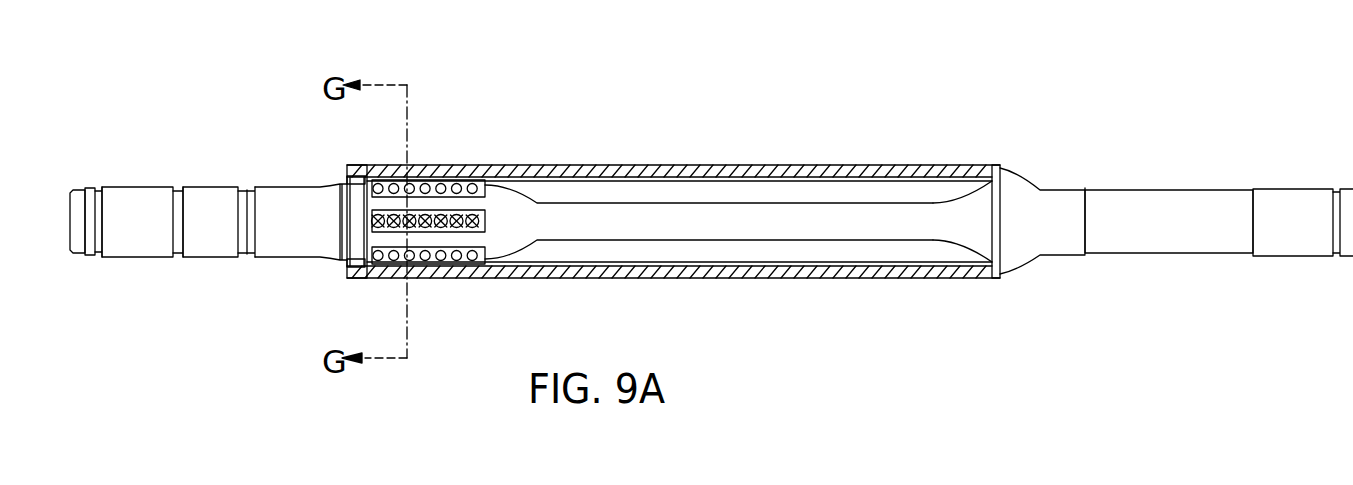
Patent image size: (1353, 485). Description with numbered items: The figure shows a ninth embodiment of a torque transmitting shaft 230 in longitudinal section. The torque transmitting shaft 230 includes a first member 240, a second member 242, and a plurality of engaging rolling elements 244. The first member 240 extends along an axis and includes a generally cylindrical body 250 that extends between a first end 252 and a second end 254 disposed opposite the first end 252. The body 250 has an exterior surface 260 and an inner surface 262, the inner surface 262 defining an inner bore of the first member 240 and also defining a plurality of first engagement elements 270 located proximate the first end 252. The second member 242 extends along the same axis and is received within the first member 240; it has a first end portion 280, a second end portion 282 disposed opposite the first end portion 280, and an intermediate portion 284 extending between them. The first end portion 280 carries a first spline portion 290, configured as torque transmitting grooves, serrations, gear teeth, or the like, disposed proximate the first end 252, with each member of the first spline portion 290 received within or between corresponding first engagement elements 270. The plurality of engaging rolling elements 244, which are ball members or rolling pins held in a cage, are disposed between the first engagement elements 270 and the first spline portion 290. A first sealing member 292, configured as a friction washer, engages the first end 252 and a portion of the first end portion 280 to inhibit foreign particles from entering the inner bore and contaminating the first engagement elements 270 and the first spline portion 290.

The torque transmitting shaft 230 is at (501, 85).
The first member 240 is at (730, 165).
The second member 242 is at (181, 165).
The plurality of engaging rolling elements 244 is at (358, 280).
The body 250 is at (805, 171).
The first end 252 is at (347, 172).
The second end 254 is at (983, 167).
The exterior surface 260 is at (580, 165).
The inner surface 262 is at (657, 180).
The plurality of first engagement elements 270 is at (392, 181).
The first end portion 280 is at (499, 248).
The second end portion 282 is at (981, 262).
The intermediate portion 284 is at (741, 262).
The first spline portion 290 is at (433, 242).
The first sealing member 292 is at (348, 268).